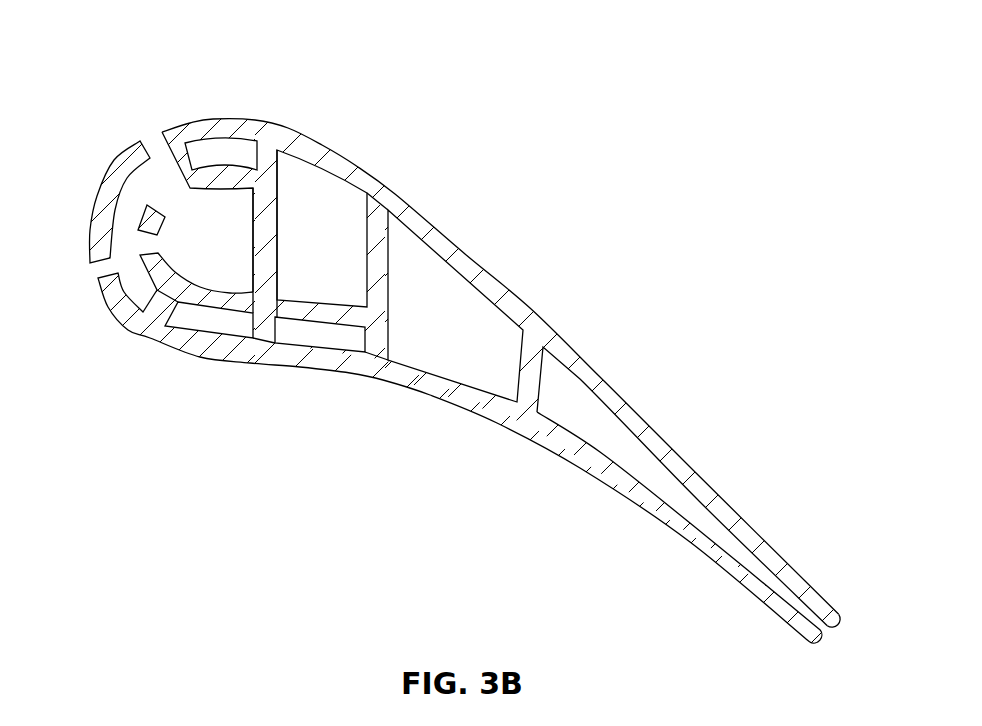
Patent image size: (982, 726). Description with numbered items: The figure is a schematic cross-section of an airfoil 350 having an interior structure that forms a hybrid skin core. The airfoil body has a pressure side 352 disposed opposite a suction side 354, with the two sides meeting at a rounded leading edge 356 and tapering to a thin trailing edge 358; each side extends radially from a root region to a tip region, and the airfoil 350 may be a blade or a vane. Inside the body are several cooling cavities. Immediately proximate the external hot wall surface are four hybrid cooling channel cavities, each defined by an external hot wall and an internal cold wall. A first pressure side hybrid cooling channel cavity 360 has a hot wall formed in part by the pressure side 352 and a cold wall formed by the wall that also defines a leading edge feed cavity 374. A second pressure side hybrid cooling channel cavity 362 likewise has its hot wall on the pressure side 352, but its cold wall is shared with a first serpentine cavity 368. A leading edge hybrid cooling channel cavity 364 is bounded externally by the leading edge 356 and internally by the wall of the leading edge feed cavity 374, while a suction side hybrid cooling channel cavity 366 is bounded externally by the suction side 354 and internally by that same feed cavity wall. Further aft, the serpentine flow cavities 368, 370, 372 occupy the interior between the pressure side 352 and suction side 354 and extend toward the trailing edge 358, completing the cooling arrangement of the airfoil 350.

The airfoil 350 is at (491, 363).
The pressure side 352 is at (520, 428).
The suction side 354 is at (470, 248).
The leading edge 356 is at (88, 202).
The trailing edge 358 is at (840, 625).
The first pressure side hybrid cooling channel cavity 360 is at (207, 325).
The second pressure side hybrid cooling channel cavity 362 is at (303, 333).
The leading edge hybrid cooling channel cavity 364 is at (130, 203).
The suction side hybrid cooling channel cavity 366 is at (237, 158).
The first serpentine cavity 368 is at (315, 187).
The serpentine flow cavity 370 is at (473, 320).
The serpentine flow cavity 372 is at (573, 403).
The leading edge feed cavity 374 is at (233, 200).